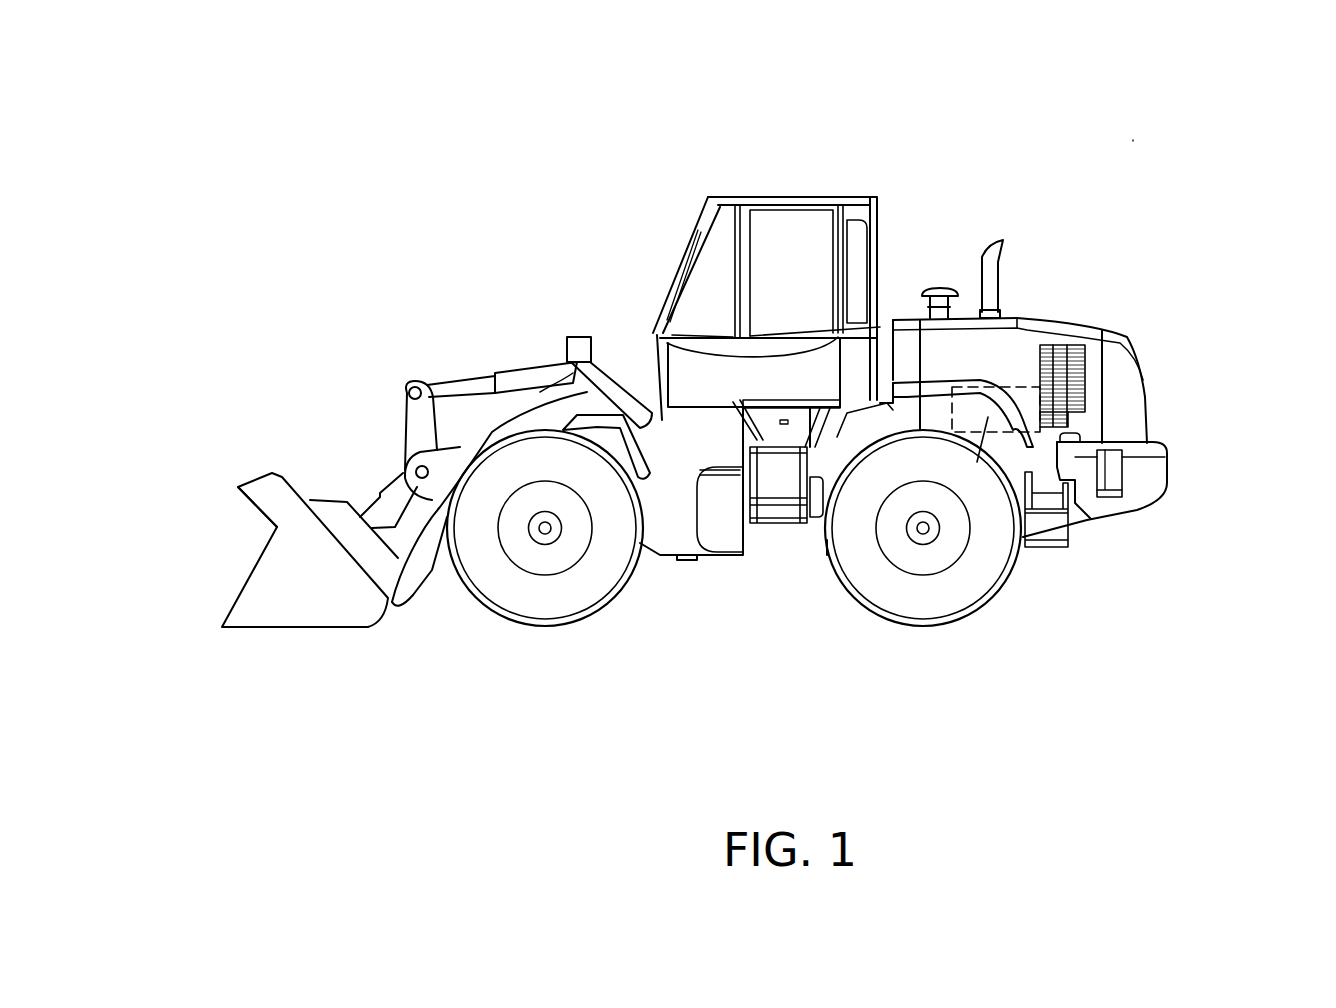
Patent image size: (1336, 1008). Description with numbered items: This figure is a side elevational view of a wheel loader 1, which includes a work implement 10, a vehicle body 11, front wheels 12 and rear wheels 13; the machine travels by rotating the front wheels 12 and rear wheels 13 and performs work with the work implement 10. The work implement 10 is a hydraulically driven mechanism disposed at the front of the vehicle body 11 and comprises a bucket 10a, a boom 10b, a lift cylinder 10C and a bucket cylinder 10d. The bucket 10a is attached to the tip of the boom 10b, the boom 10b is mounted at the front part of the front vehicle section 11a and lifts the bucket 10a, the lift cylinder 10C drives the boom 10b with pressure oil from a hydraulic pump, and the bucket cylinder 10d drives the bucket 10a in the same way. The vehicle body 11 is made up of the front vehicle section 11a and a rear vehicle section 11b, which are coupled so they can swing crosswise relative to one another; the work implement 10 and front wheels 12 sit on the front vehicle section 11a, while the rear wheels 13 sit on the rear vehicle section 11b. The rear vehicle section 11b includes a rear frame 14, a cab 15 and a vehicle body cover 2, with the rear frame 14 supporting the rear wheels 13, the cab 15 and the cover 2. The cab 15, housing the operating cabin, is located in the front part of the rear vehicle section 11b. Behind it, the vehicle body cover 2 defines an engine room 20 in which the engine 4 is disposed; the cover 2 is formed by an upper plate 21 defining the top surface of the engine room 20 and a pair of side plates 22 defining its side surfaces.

The wheel loader 1 is at (1145, 137).
The vehicle body cover 2 is at (1083, 316).
The engine 4 is at (977, 462).
The work implement 10 is at (288, 383).
The bucket 10a is at (253, 582).
The boom 10b is at (422, 582).
The lift cylinder 10C is at (578, 428).
The bucket cylinder 10d is at (500, 370).
The vehicle body 11 is at (710, 600).
The front vehicle section 11a is at (606, 319).
The rear vehicle section 11b is at (966, 182).
The front wheels 12 is at (543, 627).
The rear wheels 13 is at (908, 625).
The rear frame 14 is at (1048, 487).
The cab 15 is at (798, 195).
The engine room 20 is at (1020, 350).
The upper plate 21 is at (970, 313).
The side plates 22 is at (1097, 403).